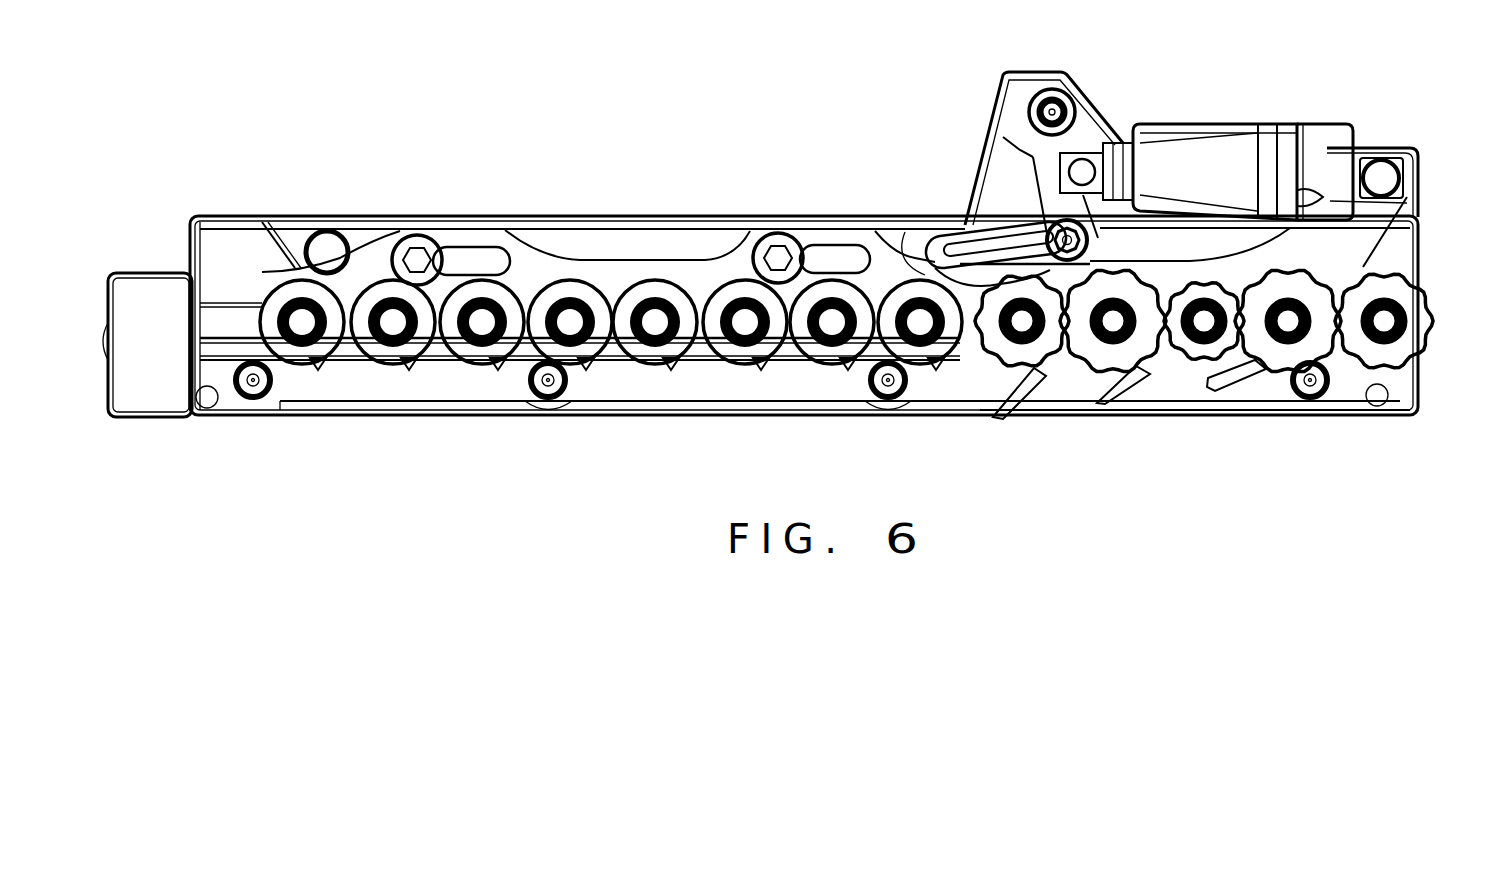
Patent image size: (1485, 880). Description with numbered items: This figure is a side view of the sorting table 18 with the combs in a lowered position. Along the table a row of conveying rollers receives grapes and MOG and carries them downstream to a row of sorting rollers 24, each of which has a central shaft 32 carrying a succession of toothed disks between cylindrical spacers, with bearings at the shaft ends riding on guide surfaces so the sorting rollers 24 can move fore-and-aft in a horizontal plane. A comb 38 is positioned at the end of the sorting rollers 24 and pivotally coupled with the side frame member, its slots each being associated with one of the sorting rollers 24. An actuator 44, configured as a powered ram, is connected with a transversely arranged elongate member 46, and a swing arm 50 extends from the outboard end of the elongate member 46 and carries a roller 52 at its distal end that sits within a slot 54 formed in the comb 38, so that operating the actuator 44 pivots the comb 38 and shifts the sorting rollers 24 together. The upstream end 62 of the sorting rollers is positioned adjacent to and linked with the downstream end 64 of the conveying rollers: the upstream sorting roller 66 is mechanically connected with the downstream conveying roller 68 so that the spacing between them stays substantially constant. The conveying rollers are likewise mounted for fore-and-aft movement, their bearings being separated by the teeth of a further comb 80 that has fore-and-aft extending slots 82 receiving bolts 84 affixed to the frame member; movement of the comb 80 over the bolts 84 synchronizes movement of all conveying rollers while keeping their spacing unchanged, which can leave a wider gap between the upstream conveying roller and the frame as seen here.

The sorting table 18 is at (745, 176).
The sorting rollers 24 is at (1355, 372).
The central shaft 32 is at (1380, 325).
The comb 38 is at (1355, 243).
The actuator 44 is at (1235, 122).
The elongate member 46 is at (1066, 97).
The swing arm 50 is at (1040, 205).
The roller 52 is at (1048, 238).
The slot 54 is at (930, 245).
The upstream end 62 is at (1119, 438).
The downstream end 64 is at (850, 381).
The upstream sorting roller 66 is at (1032, 372).
The downstream conveying roller 68 is at (925, 346).
The comb 80 is at (537, 250).
The slot 82 is at (468, 246).
The bolt 84 is at (418, 236).